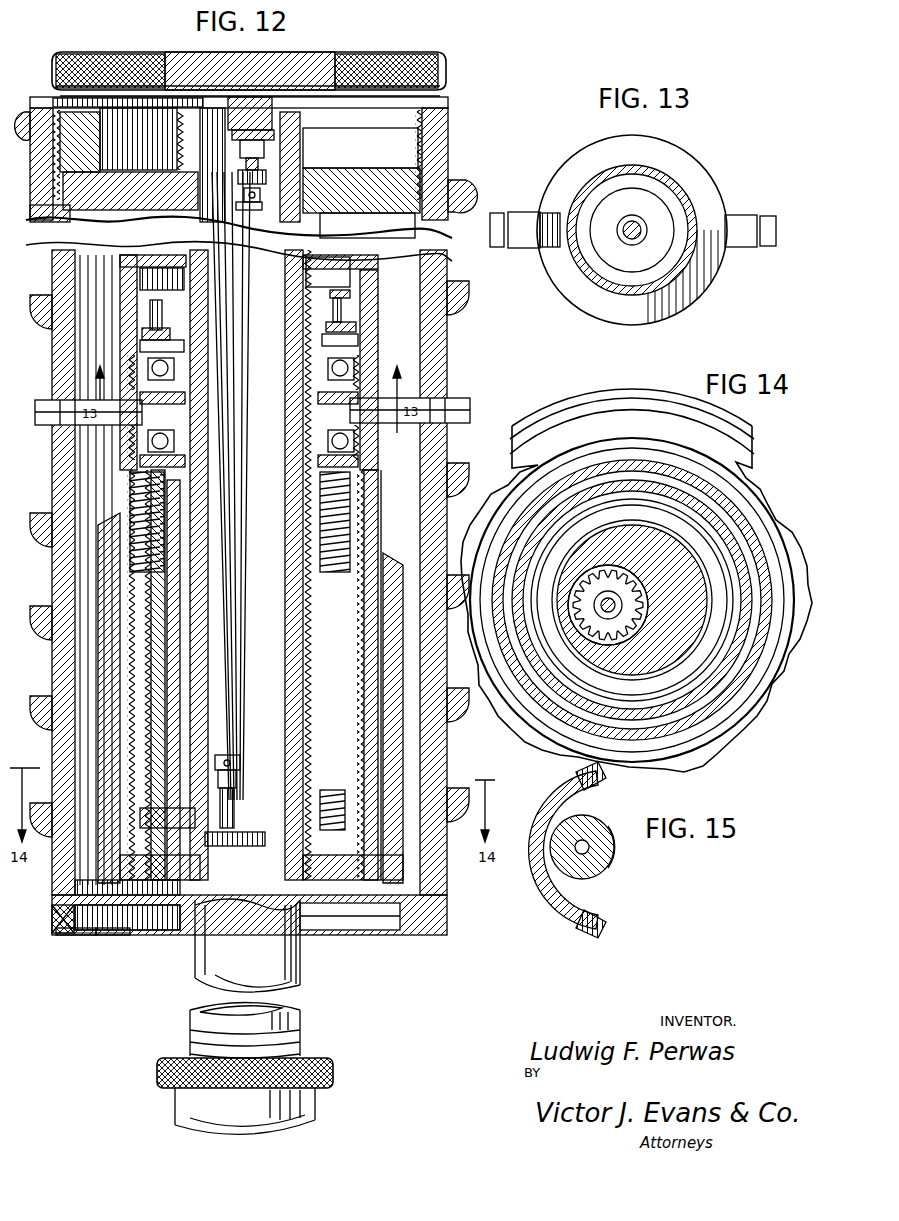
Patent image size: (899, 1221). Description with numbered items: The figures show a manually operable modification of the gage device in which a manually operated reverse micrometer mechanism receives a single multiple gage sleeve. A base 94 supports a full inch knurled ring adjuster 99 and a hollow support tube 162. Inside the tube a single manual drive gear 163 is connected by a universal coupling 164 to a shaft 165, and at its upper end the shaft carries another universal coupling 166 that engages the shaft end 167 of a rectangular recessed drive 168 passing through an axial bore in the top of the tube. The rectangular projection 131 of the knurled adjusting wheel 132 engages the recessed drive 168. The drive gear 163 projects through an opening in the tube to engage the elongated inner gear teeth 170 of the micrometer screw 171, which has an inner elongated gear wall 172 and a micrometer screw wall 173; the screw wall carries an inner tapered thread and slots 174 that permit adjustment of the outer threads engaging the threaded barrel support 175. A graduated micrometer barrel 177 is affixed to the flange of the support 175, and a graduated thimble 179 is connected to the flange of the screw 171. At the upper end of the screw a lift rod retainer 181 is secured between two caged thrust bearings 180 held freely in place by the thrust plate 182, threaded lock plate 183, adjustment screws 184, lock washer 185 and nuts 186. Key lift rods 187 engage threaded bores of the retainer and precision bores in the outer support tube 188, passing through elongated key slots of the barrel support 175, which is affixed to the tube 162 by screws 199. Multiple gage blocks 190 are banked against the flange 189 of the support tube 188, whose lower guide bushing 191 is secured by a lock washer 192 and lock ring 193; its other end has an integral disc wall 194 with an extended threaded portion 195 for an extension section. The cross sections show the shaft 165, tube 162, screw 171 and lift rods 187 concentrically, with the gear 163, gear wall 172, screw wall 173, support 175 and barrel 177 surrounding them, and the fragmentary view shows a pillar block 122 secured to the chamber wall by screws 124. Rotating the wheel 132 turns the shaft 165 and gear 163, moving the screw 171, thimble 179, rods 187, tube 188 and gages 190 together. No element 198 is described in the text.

In FIG. 12, the adjusting wheel 132 is at (438, 64).
In FIG. 12, the rectangular projection 131 is at (272, 134).
In FIG. 12, the rectangular recessed drive 168 is at (262, 148).
In FIG. 12, the shaft end 167 is at (258, 164).
In FIG. 12, the extended threaded portion 195 is at (330, 182).
In FIG. 12, the universal coupling 166 is at (260, 196).
In FIG. 12, the integral disc wall 194 is at (392, 196).
In FIG. 12, the screws 199 is at (190, 264).
In FIG. 12, the threaded barrel support 175 is at (128, 330).
In FIG. 14, the threaded barrel support 175 is at (693, 703).
In FIG. 12, the adjustment screws 184 is at (345, 296).
In FIG. 12, the nuts 186 is at (340, 318).
In FIG. 12, the lock washer 185 is at (350, 330).
In FIG. 12, the threaded lock plate 183 is at (356, 344).
In FIG. 12, the thrust plate 182 is at (70, 400).
In FIG. 12, the lift rod retainer 181 is at (332, 392).
In FIG. 13, the lift rod retainer 181 is at (694, 302).
In FIG. 12, the caged thrust bearings 180 is at (140, 442).
In FIG. 12, the key lift rods 187 is at (420, 422).
In FIG. 13, the key lift rods 187 is at (530, 212).
In FIG. 12, the micrometer screw 171 is at (340, 470).
In FIG. 13, the micrometer screw 171 is at (675, 186).
In FIG. 12, the micrometer screw wall 173 is at (352, 492).
In FIG. 14, the micrometer screw wall 173 is at (697, 677).
In FIG. 12, the slots 174 is at (138, 570).
In FIG. 12, the shaft 165 is at (240, 540).
In FIG. 13, the shaft 165 is at (646, 222).
In FIG. 12, the hollow support tube 162 is at (294, 342).
In FIG. 13, the hollow support tube 162 is at (664, 198).
In FIG. 14, the hollow support tube 162 is at (600, 570).
In FIG. 12, the inner elongated gear wall 172 is at (305, 716).
In FIG. 14, the inner elongated gear wall 172 is at (657, 643).
In FIG. 12, the elongated inner gear teeth 170 is at (300, 694).
In FIG. 12, the universal coupling 164 is at (273, 738).
In FIG. 12, the manual drive gear 163 is at (266, 830).
In FIG. 14, the manual drive gear 163 is at (628, 572).
In FIG. 12, the graduated micrometer barrel 177 is at (100, 666).
In FIG. 14, the graduated micrometer barrel 177 is at (747, 683).
In FIG. 12, the graduated thimble 179 is at (100, 690).
In FIG. 12, the support tube 188 is at (150, 474).
In FIG. 12, the threaded member 198 is at (128, 484).
In FIG. 12, the multiple gage blocks 190 is at (52, 590).
In FIG. 12, the flange 189 is at (43, 902).
In FIG. 12, the guide bushing 191 is at (126, 930).
In FIG. 12, the lock washer 192 is at (80, 940).
In FIG. 12, the lock ring 193 is at (110, 940).
In FIG. 12, the knurled ring adjuster 99 is at (320, 1062).
In FIG. 12, the base 94 is at (322, 1092).
In FIG. 15, the screws 124 is at (598, 776).
In FIG. 15, the pillar block 122 is at (600, 860).